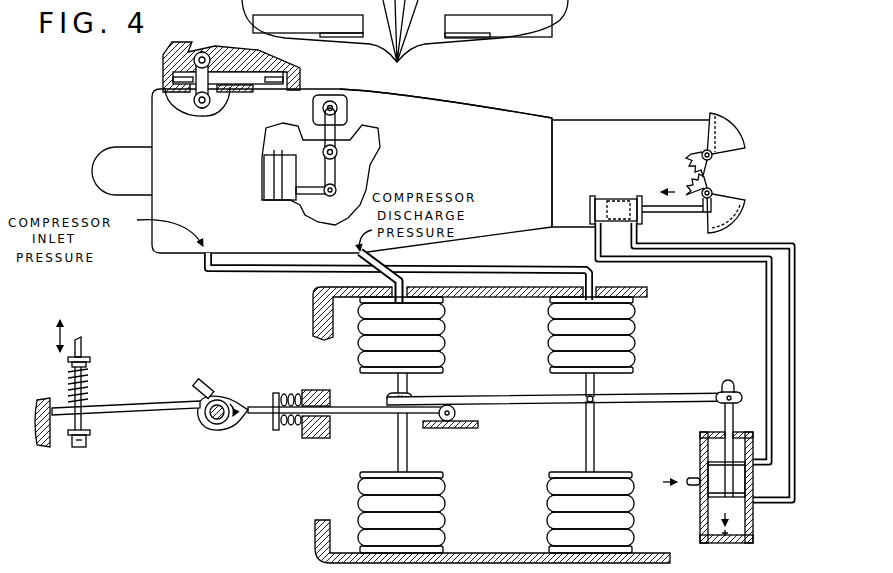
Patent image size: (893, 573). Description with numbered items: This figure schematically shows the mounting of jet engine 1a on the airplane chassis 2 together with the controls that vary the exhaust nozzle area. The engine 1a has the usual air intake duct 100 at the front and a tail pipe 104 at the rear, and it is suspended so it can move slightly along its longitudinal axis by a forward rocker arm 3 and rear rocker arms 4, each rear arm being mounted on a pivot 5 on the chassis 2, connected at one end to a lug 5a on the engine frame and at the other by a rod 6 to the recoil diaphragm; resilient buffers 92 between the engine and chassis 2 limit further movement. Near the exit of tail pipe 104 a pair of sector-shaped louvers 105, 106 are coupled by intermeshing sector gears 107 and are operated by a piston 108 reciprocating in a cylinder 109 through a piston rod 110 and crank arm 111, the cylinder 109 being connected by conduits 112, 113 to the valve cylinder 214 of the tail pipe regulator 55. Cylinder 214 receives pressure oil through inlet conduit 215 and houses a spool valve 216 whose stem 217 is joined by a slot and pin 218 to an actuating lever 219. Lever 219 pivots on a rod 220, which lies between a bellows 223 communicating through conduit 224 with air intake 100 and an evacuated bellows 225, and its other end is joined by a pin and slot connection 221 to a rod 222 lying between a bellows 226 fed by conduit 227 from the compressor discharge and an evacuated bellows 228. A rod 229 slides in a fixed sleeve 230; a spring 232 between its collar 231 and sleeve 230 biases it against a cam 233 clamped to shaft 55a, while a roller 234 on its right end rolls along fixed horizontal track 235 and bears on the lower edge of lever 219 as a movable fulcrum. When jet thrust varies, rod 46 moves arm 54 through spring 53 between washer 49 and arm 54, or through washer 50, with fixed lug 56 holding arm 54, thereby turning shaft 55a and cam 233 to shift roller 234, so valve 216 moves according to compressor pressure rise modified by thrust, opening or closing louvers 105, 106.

The air intake duct 100 is at (147, 126).
The jet engine 1a is at (462, 108).
The chassis 2 is at (177, 50).
The forward rocker arm 3 is at (212, 57).
The resilient buffer 92 is at (163, 80).
The rear rocker arm 4 is at (344, 122).
The lug 5a is at (336, 106).
The pivot 5 is at (337, 152).
The rod 6 is at (324, 196).
The tail pipe 104 is at (628, 132).
The sector-shaped louver 105 is at (728, 141).
The intermeshing sector gears 107 is at (692, 160).
The crank arm 111 is at (713, 190).
The sector-shaped louver 106 is at (744, 215).
The piston rod 110 is at (672, 213).
The cylinder 109 is at (596, 200).
The piston 108 is at (618, 201).
The conduit 112 is at (753, 247).
The conduit 113 is at (737, 267).
The conduit 227 is at (388, 275).
The conduit 224 is at (487, 272).
The bellows 226 is at (427, 333).
The bellows 223 is at (623, 332).
The evacuated bellows 228 is at (425, 518).
The evacuated bellows 225 is at (623, 518).
The rod 222 is at (408, 450).
The pin and slot connection 221 is at (393, 395).
The actuating lever 219 is at (648, 397).
The slot and pin 218 is at (720, 386).
The rod 220 is at (593, 435).
The rod 229 is at (362, 413).
The roller 234 is at (457, 412).
The fixed horizontal track 235 is at (473, 428).
The fixed sleeve 230 is at (330, 432).
The spring 232 is at (287, 393).
The collar 231 is at (277, 420).
The cam 233 is at (213, 427).
The shaft 55a is at (218, 390).
The tail pipe regulator 55 is at (326, 481).
The arm 54 is at (133, 413).
The fixed lug 56 is at (62, 418).
The rod 46 is at (83, 345).
The washer 49 is at (90, 363).
The spring 53 is at (88, 384).
The washer 50 is at (88, 438).
The valve cylinder 214 is at (755, 519).
The spool valve 216 is at (727, 482).
The stem 217 is at (727, 415).
The inlet conduit 215 is at (688, 483).